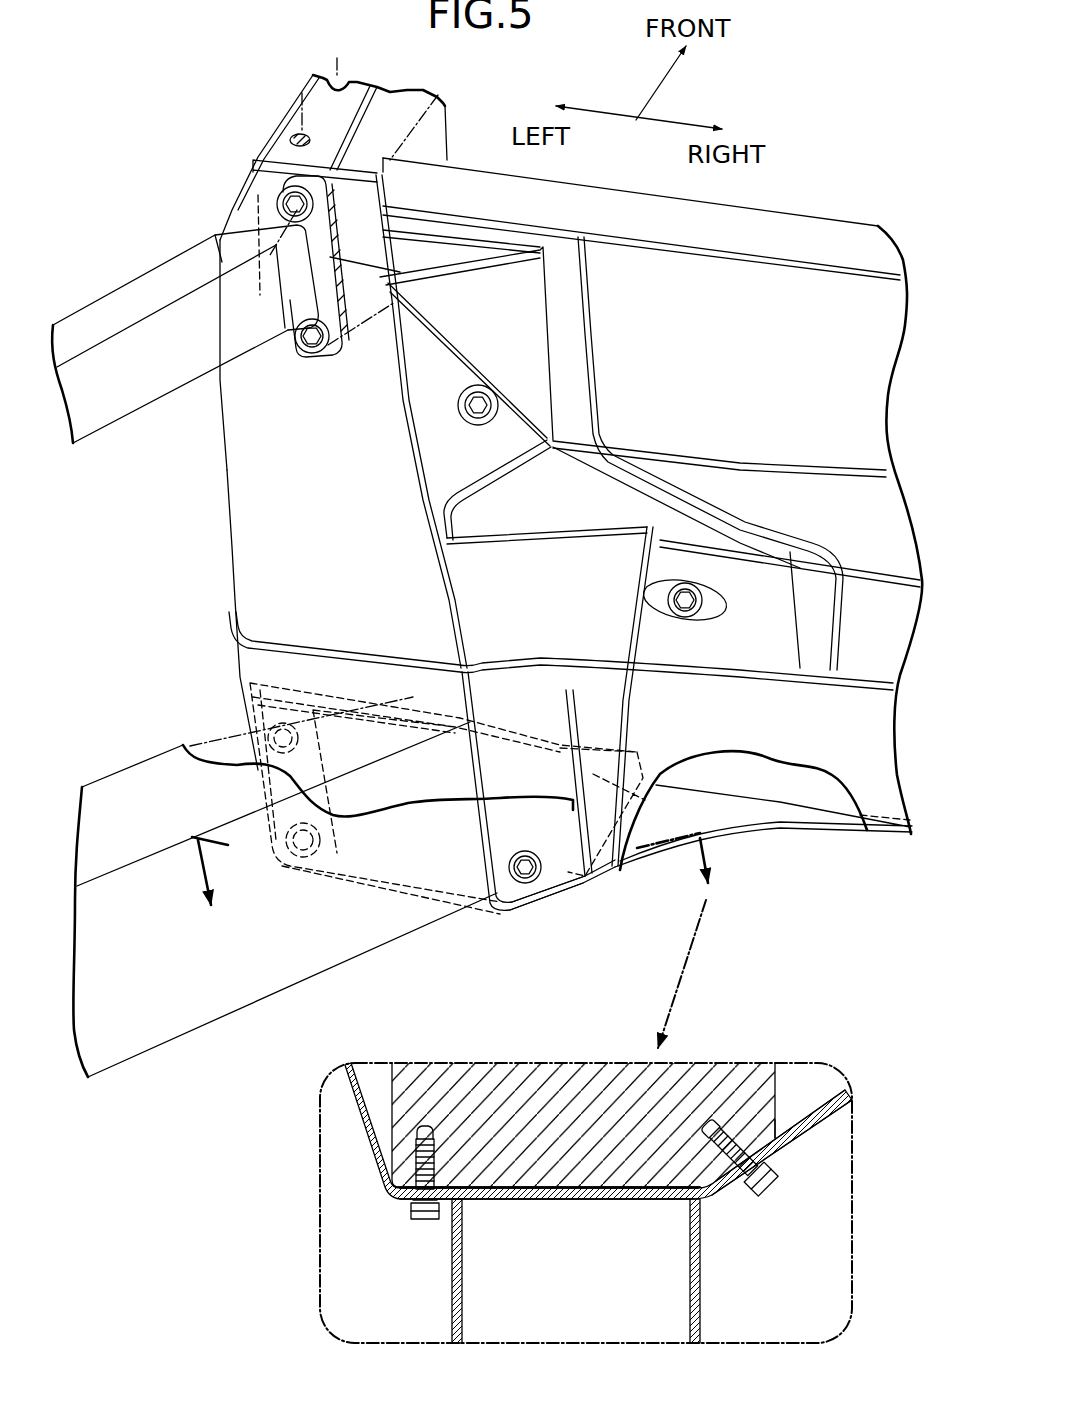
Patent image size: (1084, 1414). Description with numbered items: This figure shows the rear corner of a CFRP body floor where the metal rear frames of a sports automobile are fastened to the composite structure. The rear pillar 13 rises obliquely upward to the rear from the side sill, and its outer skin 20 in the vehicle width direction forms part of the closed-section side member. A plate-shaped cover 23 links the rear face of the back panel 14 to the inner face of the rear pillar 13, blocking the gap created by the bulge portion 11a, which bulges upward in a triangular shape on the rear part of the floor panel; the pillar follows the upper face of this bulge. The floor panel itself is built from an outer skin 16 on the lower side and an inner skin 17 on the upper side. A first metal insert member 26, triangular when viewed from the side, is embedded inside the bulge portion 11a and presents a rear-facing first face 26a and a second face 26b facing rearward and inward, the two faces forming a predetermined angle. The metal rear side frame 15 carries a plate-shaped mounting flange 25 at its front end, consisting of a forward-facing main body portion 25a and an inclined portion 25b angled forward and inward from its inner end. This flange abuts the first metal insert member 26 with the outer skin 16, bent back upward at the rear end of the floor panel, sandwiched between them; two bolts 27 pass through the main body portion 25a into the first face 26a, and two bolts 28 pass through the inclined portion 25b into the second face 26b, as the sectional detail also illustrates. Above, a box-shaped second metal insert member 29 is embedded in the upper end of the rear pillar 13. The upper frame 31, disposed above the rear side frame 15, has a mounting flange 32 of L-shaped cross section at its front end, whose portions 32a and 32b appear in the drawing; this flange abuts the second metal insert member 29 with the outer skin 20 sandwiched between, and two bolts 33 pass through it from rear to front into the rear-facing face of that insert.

The bulge portion 11a is at (393, 862).
The rear pillar 13 is at (225, 473).
The back panel 14 is at (786, 293).
The rear side frame 15 is at (141, 777).
The outer skin 16 is at (260, 665).
The inner skin 17 is at (765, 786).
The outer skin 20 is at (257, 553).
The cover 23 is at (583, 503).
The mounting flange 25 is at (522, 913).
The main body portion 25a is at (487, 905).
The inclined portion 25b is at (587, 880).
The first metal insert member 26 is at (358, 883).
The first face 26a is at (400, 770).
The second face 26b is at (563, 759).
The bolt 27 is at (290, 834).
The bolt 28 is at (512, 866).
The second metal insert member 29 is at (298, 92).
The upper frame 31 is at (141, 293).
The mounting flange 32 is at (330, 212).
The bracket plate portion 32a is at (322, 253).
The bracket box portion 32b is at (230, 207).
The bolt 33 is at (292, 332).